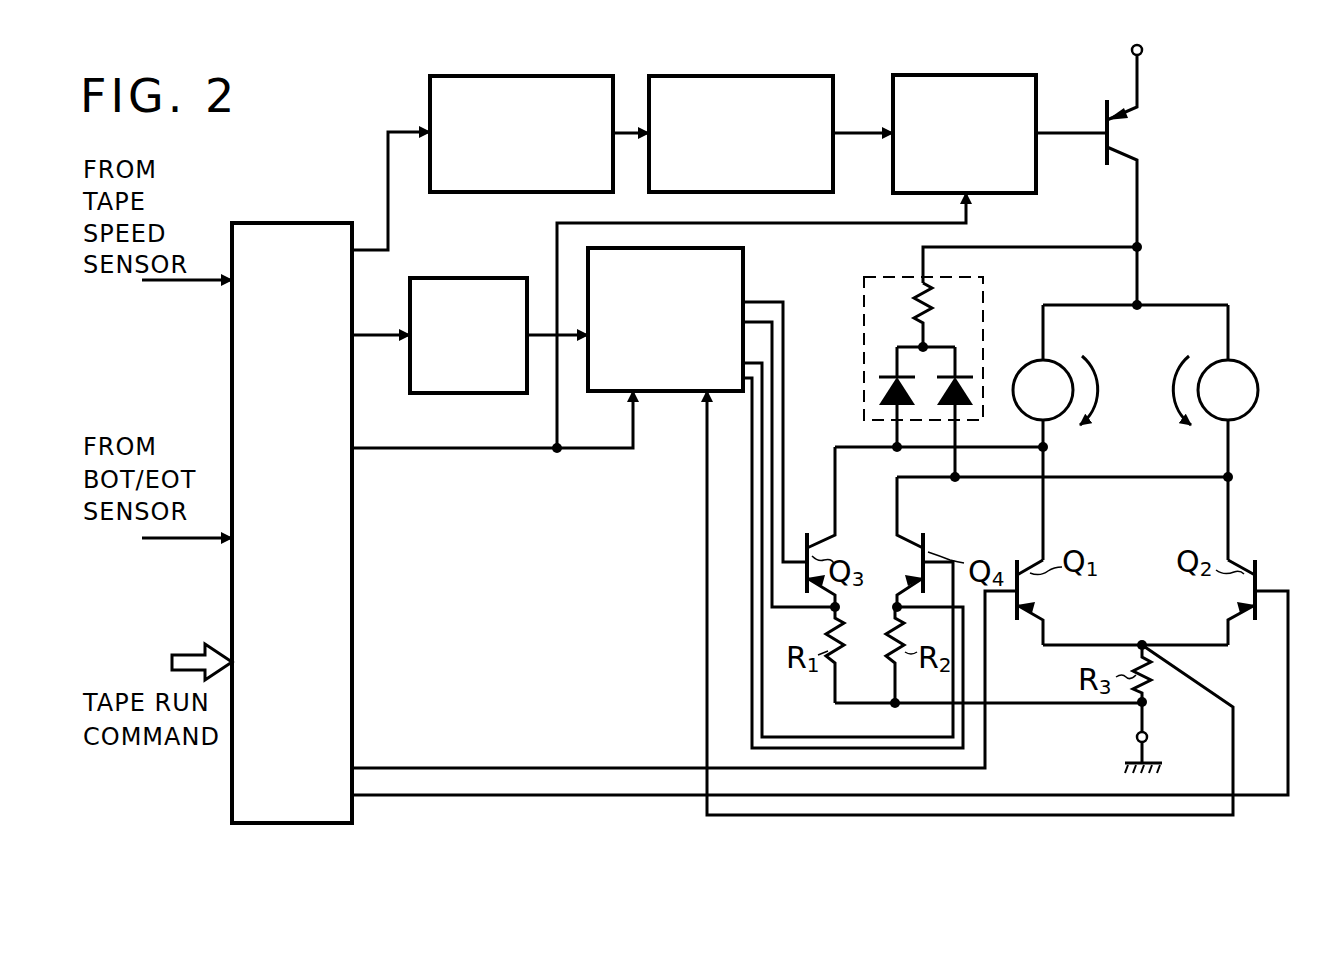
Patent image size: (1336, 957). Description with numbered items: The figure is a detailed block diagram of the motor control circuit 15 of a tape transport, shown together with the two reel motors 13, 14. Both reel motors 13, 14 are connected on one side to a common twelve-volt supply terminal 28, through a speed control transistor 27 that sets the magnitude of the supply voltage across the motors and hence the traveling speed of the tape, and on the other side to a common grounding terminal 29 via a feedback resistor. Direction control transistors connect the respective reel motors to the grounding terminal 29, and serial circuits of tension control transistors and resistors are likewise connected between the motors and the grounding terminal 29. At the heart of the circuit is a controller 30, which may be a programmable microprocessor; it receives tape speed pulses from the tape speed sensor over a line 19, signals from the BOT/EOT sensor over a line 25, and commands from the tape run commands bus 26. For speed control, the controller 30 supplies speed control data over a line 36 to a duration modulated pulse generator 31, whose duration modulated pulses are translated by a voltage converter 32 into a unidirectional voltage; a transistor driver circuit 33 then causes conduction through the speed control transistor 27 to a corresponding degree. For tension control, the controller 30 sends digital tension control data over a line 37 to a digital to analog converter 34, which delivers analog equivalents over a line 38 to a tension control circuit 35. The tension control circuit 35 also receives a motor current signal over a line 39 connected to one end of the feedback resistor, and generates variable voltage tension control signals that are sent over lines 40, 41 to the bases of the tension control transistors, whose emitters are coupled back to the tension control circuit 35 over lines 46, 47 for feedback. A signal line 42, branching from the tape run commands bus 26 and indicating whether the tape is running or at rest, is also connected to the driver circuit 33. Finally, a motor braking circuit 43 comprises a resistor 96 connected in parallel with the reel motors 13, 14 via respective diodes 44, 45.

The reel motor 13 is at (1048, 360).
The reel motor 14 is at (1222, 360).
The motor control circuit 15 is at (818, 66).
The line 19 is at (185, 284).
The line 25 is at (185, 541).
The tape run commands bus 26 is at (190, 655).
The speed control transistor 27 is at (1120, 148).
The 12-volt supply terminal 28 is at (1143, 51).
The grounding terminal 29 is at (1137, 737).
The controller 30 is at (352, 563).
The duration modulated pulse generator 31 is at (508, 76).
The voltage converter 32 is at (728, 76).
The transistor driver circuit 33 is at (946, 75).
The digital to analog converter 34 is at (478, 393).
The tension control circuit 35 is at (672, 391).
The line 36 is at (388, 250).
The line 37 is at (372, 338).
The line 38 is at (544, 333).
The line 39 is at (705, 548).
The line 40 is at (785, 340).
The line 41 is at (760, 474).
The signal line 42 is at (378, 448).
The motor braking circuit 43 is at (985, 328).
The diode 44 is at (893, 377).
The diode 45 is at (960, 398).
The line 46 is at (774, 385).
The line 47 is at (754, 514).
The resistor 96 is at (930, 317).